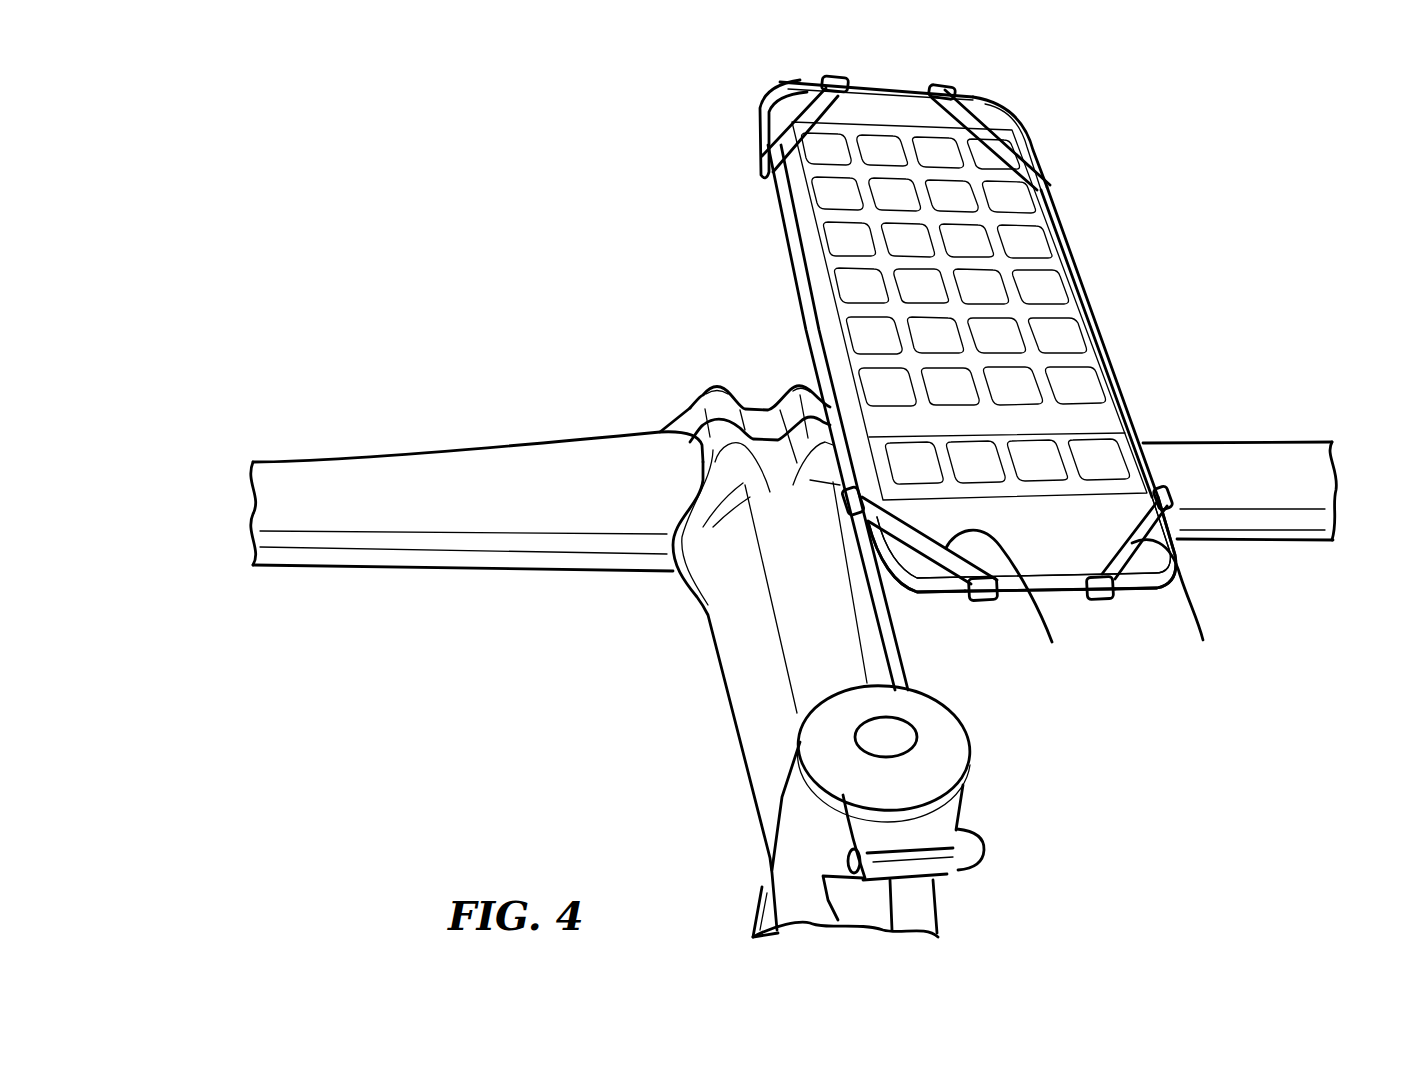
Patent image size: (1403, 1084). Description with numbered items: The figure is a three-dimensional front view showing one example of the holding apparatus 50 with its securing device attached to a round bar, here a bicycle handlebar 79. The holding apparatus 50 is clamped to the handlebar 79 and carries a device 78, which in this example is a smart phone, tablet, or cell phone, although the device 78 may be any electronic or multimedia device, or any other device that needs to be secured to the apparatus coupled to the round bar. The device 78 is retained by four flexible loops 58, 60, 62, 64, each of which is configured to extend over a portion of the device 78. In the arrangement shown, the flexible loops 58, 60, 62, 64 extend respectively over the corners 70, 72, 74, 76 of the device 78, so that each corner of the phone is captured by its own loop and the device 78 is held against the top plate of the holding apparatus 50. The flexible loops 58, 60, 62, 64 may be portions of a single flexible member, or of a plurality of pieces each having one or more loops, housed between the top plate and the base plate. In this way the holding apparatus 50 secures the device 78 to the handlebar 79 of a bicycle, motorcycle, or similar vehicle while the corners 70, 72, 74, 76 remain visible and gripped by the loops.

The holding apparatus 50 is at (727, 262).
The flexible loop 58 is at (823, 100).
The flexible loop 60 is at (984, 104).
The flexible loop 62 is at (1020, 577).
The flexible loop 64 is at (1133, 540).
The corner 70 is at (760, 110).
The corner 72 is at (1022, 112).
The corner 74 is at (903, 590).
The corner 76 is at (1160, 583).
The device 78 is at (1090, 297).
The handlebar 79 is at (530, 457).